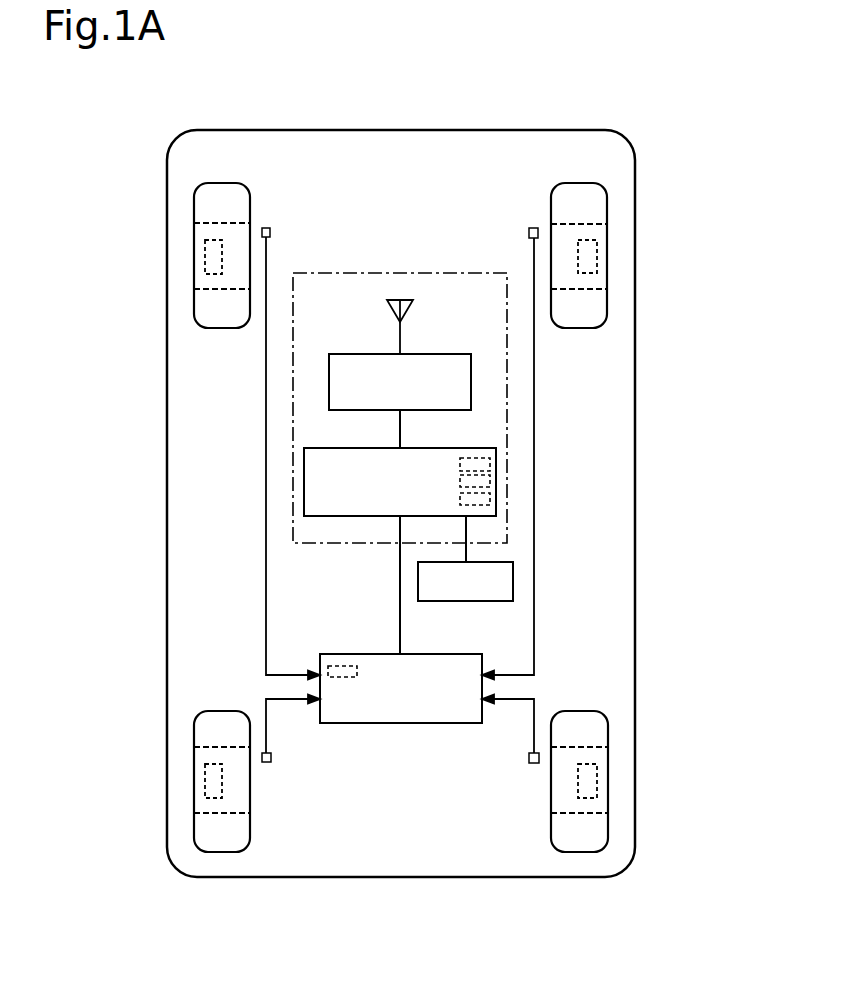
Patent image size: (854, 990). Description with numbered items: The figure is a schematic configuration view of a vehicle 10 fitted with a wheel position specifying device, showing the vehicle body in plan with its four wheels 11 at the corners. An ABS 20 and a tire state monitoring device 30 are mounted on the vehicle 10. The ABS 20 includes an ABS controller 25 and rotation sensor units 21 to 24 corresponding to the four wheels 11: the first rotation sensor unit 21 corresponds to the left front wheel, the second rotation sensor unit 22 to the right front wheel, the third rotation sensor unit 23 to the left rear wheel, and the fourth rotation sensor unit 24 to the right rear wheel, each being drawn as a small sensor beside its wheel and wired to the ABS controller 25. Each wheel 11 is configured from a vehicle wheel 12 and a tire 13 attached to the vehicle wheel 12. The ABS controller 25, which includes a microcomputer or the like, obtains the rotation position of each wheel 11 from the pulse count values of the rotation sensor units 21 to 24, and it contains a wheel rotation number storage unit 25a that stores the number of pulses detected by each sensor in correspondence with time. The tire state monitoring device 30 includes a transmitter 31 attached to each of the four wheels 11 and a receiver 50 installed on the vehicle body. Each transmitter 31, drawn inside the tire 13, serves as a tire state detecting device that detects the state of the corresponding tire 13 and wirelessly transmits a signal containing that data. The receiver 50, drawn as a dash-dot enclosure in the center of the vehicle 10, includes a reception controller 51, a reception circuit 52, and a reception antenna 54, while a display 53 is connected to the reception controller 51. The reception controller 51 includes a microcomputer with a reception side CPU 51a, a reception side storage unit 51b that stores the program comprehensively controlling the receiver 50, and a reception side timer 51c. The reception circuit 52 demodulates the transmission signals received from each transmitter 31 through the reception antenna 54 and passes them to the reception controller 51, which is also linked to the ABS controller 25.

The vehicle 10 is at (613, 116).
The wheel 11 is at (400, 517).
The vehicle wheel 12 is at (196, 213).
The tire 13 is at (205, 208).
The transmitter 31 is at (205, 256).
The ABS 20 is at (427, 497).
The first rotation sensor unit 21 is at (266, 228).
The second rotation sensor unit 22 is at (533, 228).
The third rotation sensor unit 23 is at (268, 762).
The fourth rotation sensor unit 24 is at (533, 763).
The ABS controller 25 is at (400, 723).
The wheel rotation number storage unit 25a is at (340, 666).
The tire state monitoring device 30 is at (557, 621).
The receiver 50 is at (340, 543).
The reception controller 51 is at (418, 448).
The reception side CPU 51a is at (491, 498).
The reception side storage unit 51b is at (491, 480).
The reception side timer 51c is at (491, 465).
The reception circuit 52 is at (425, 354).
The display 53 is at (455, 601).
The reception antenna 54 is at (408, 299).